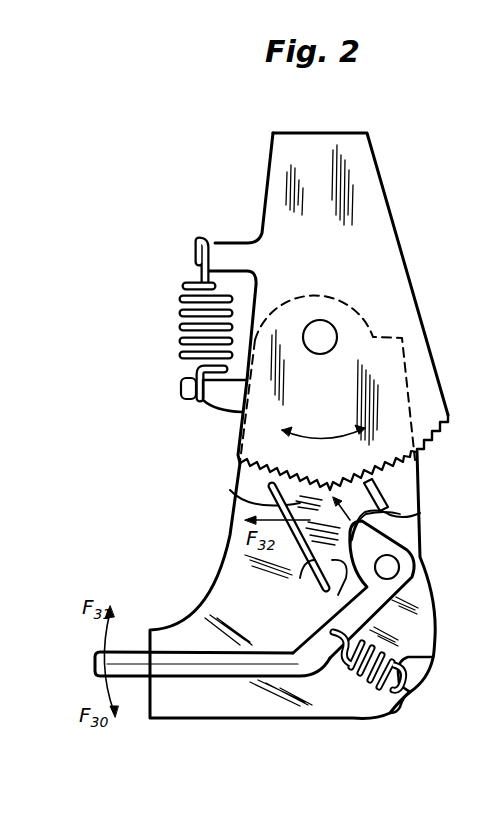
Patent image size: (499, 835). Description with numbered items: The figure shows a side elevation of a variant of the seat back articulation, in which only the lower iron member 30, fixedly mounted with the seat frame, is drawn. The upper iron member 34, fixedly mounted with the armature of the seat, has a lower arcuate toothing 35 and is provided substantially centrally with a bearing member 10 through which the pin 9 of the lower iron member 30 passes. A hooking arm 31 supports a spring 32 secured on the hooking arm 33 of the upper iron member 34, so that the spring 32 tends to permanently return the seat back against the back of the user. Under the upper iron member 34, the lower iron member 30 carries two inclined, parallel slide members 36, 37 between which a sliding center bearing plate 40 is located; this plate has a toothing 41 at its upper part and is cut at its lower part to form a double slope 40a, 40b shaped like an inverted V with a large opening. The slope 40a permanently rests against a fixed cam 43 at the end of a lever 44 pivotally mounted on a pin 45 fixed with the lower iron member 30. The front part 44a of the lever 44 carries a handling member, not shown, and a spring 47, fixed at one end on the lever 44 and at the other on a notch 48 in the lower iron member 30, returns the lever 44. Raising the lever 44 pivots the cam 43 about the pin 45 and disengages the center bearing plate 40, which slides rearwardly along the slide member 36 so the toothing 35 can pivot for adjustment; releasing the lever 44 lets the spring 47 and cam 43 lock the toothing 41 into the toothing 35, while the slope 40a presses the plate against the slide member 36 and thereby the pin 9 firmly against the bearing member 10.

The pin 9 is at (337, 339).
The bearing member 10 is at (327, 321).
The lower iron member 30 is at (413, 623).
The hooking arm 31 is at (227, 398).
The spring 32 is at (180, 313).
The hooking arm 33 is at (233, 243).
The upper iron member 34 is at (382, 186).
The lower arcuate toothing 35 is at (438, 441).
The slide member 36 is at (300, 576).
The slide member 37 is at (385, 500).
The sliding center bearing plate 40 is at (339, 550).
The slope 40a is at (306, 553).
The slope 40b is at (400, 513).
The toothing 41 is at (303, 488).
The fixed cam 43 is at (281, 598).
The lever 44 is at (333, 656).
The front part of the lever 44a is at (131, 652).
The pin 45 is at (393, 567).
The spring 47 is at (403, 657).
The notch 48 is at (406, 692).